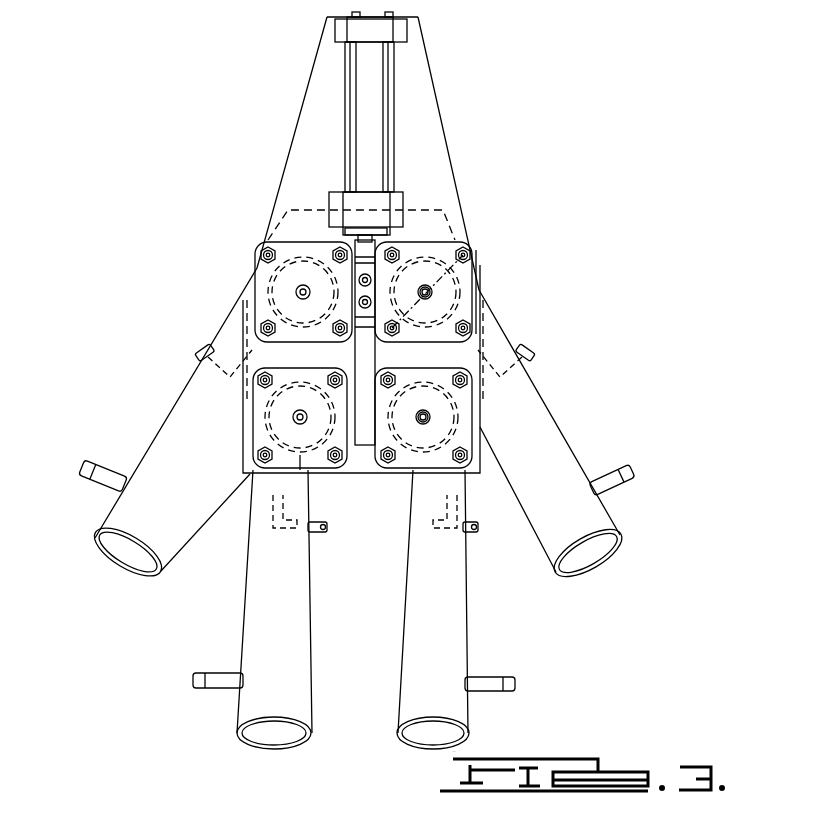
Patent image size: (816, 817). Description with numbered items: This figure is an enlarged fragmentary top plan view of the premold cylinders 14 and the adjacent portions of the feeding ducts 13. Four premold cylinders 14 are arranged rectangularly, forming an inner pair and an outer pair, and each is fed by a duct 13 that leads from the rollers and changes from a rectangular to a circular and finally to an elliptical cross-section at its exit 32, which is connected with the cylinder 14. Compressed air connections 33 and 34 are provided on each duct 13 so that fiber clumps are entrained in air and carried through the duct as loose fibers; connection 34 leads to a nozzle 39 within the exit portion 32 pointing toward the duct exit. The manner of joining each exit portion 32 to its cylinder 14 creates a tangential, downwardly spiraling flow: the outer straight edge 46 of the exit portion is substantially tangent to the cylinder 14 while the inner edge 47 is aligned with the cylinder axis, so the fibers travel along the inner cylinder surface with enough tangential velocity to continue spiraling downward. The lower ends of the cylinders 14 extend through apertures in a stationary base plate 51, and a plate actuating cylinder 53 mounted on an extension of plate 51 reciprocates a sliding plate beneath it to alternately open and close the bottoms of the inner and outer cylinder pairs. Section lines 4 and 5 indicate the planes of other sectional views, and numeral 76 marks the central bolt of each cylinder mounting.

The stationary base plate 51 is at (423, 85).
The plate actuating cylinder 53 is at (377, 120).
The inner edge 47 is at (378, 340).
The premold cylinder 14 is at (330, 366).
The outer straight edge 46 is at (455, 270).
The center pivot bolt 76 is at (431, 365).
The exit of the duct 32 is at (262, 543).
The duct 13 is at (316, 615).
The compressed air connection 33 is at (492, 680).
The compressed air connection 34 is at (197, 353).
The nozzle 39 is at (298, 508).
The section line 4- 4 is at (508, 248).
The section line 5- 5 is at (394, 470).